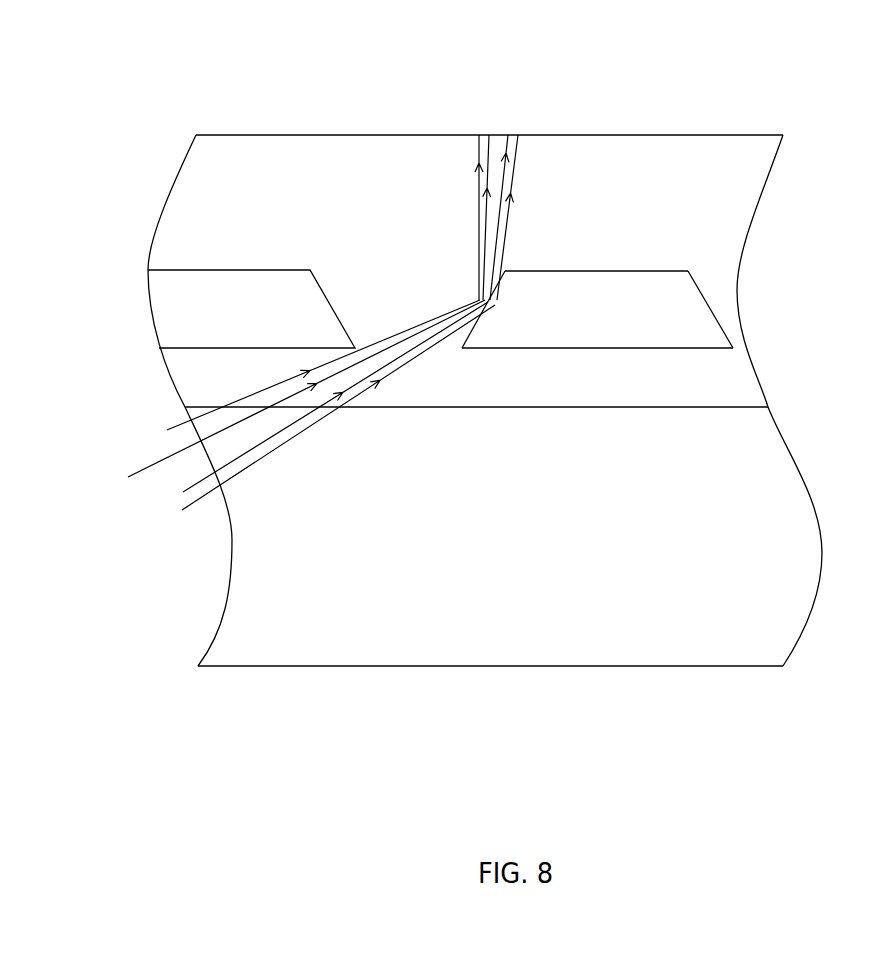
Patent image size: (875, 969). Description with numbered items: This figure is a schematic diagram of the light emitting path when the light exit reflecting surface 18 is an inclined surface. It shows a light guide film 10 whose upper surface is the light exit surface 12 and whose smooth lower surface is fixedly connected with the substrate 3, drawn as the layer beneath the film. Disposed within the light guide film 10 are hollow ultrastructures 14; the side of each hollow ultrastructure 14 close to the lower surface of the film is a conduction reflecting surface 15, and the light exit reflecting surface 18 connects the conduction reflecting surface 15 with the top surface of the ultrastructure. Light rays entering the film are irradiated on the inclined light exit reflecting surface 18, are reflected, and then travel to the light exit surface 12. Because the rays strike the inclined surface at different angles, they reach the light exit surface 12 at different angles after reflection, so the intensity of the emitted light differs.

The substrate 3 is at (363, 623).
The light guide film 10 is at (355, 173).
The light exit surface 12 is at (432, 135).
The hollow ultrastructure 14 is at (663, 302).
The conduction reflecting surface 15 is at (673, 347).
The light exit reflecting surface 18 is at (490, 300).